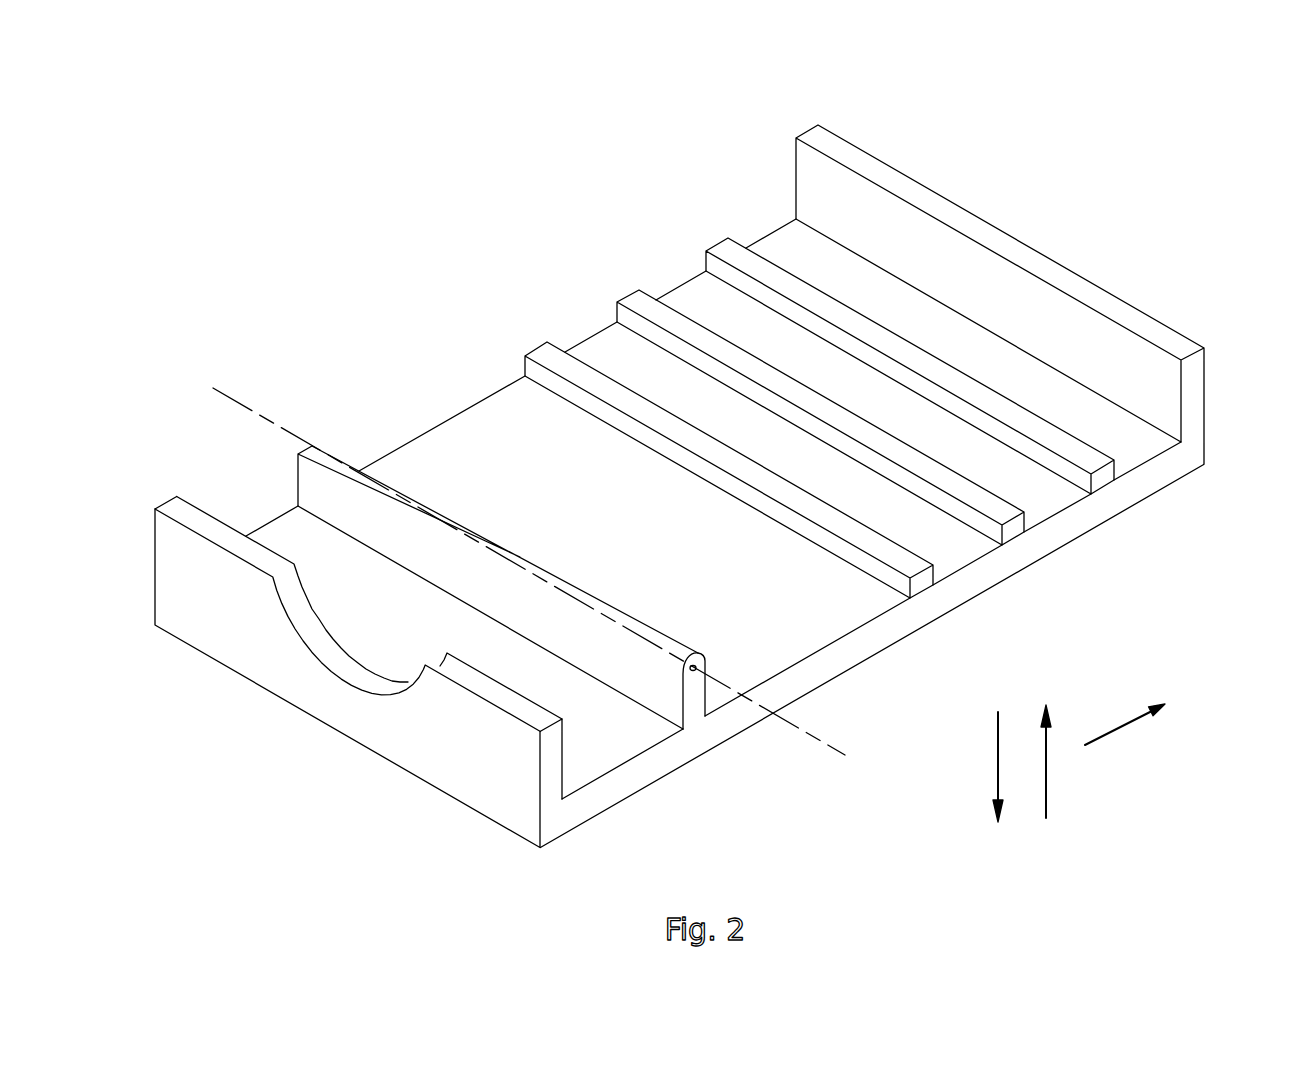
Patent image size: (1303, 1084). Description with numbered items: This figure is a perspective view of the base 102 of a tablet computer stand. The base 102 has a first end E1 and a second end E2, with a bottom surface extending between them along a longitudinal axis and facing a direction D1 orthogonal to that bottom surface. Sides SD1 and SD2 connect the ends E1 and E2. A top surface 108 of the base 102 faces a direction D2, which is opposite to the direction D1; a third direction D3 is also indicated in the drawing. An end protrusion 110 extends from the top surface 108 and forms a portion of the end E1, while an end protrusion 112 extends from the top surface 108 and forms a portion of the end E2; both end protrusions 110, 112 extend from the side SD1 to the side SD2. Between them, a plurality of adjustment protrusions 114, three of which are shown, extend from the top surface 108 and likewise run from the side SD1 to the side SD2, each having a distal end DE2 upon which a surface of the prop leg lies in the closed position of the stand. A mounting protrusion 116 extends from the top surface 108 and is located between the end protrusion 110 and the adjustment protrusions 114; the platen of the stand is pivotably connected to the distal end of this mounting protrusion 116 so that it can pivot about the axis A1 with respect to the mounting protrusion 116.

The base 102 is at (698, 459).
The top surface 108 is at (456, 447).
The end protrusion 110 is at (235, 625).
The end protrusion 112 is at (1190, 400).
The adjustment protrusions 114 is at (922, 583).
The mounting protrusion 116 is at (693, 692).
The axis A1 is at (242, 410).
The end E1 is at (416, 775).
The end E2 is at (1148, 309).
The side SD1 is at (858, 661).
The side SD2 is at (585, 342).
The distal end DE2 is at (651, 310).
The direction D1 is at (995, 758).
The direction D2 is at (1050, 765).
The direction D3 is at (1118, 742).